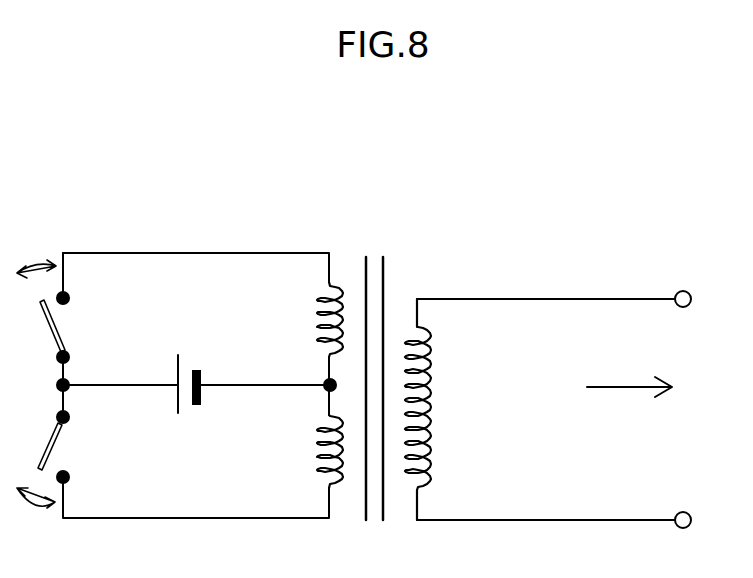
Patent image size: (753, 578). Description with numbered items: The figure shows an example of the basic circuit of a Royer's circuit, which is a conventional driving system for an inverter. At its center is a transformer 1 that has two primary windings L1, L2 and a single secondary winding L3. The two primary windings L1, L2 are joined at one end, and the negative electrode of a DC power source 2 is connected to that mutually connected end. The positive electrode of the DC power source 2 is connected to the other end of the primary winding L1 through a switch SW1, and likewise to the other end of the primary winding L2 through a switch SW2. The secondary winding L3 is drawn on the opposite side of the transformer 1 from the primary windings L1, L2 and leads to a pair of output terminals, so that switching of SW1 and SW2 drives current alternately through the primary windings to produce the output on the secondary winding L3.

The transformer 1 is at (411, 258).
The DC power source 2 is at (186, 372).
The switch SW1 is at (91, 326).
The switch SW2 is at (90, 448).
The primary winding L1 is at (320, 312).
The primary winding L2 is at (320, 445).
The secondary winding L3 is at (432, 404).